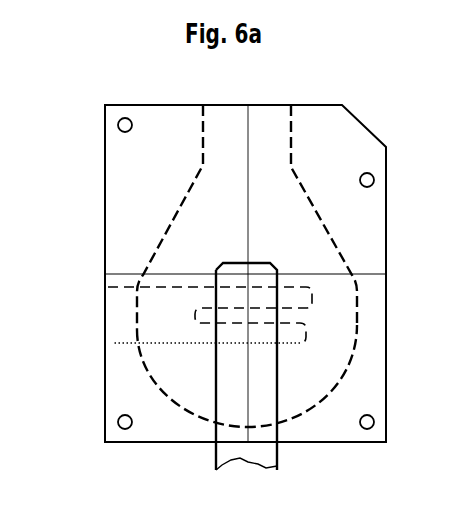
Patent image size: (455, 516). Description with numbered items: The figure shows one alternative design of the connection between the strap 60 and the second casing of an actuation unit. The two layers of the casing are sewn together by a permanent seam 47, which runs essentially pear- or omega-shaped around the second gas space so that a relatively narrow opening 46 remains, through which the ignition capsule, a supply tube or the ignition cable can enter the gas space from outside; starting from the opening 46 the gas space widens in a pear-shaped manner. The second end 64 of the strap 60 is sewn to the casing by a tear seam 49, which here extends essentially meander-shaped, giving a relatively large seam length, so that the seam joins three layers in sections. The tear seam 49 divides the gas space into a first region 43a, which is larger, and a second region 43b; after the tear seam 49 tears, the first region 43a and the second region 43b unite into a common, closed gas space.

The opening 46 is at (262, 133).
The first region of the gas space 43a is at (330, 322).
The second region of the gas space 43b is at (158, 323).
The permanent seam 47 is at (343, 377).
The tear seam 49 is at (182, 347).
The strap 60 is at (260, 455).
The second end of the strap 64 is at (216, 382).